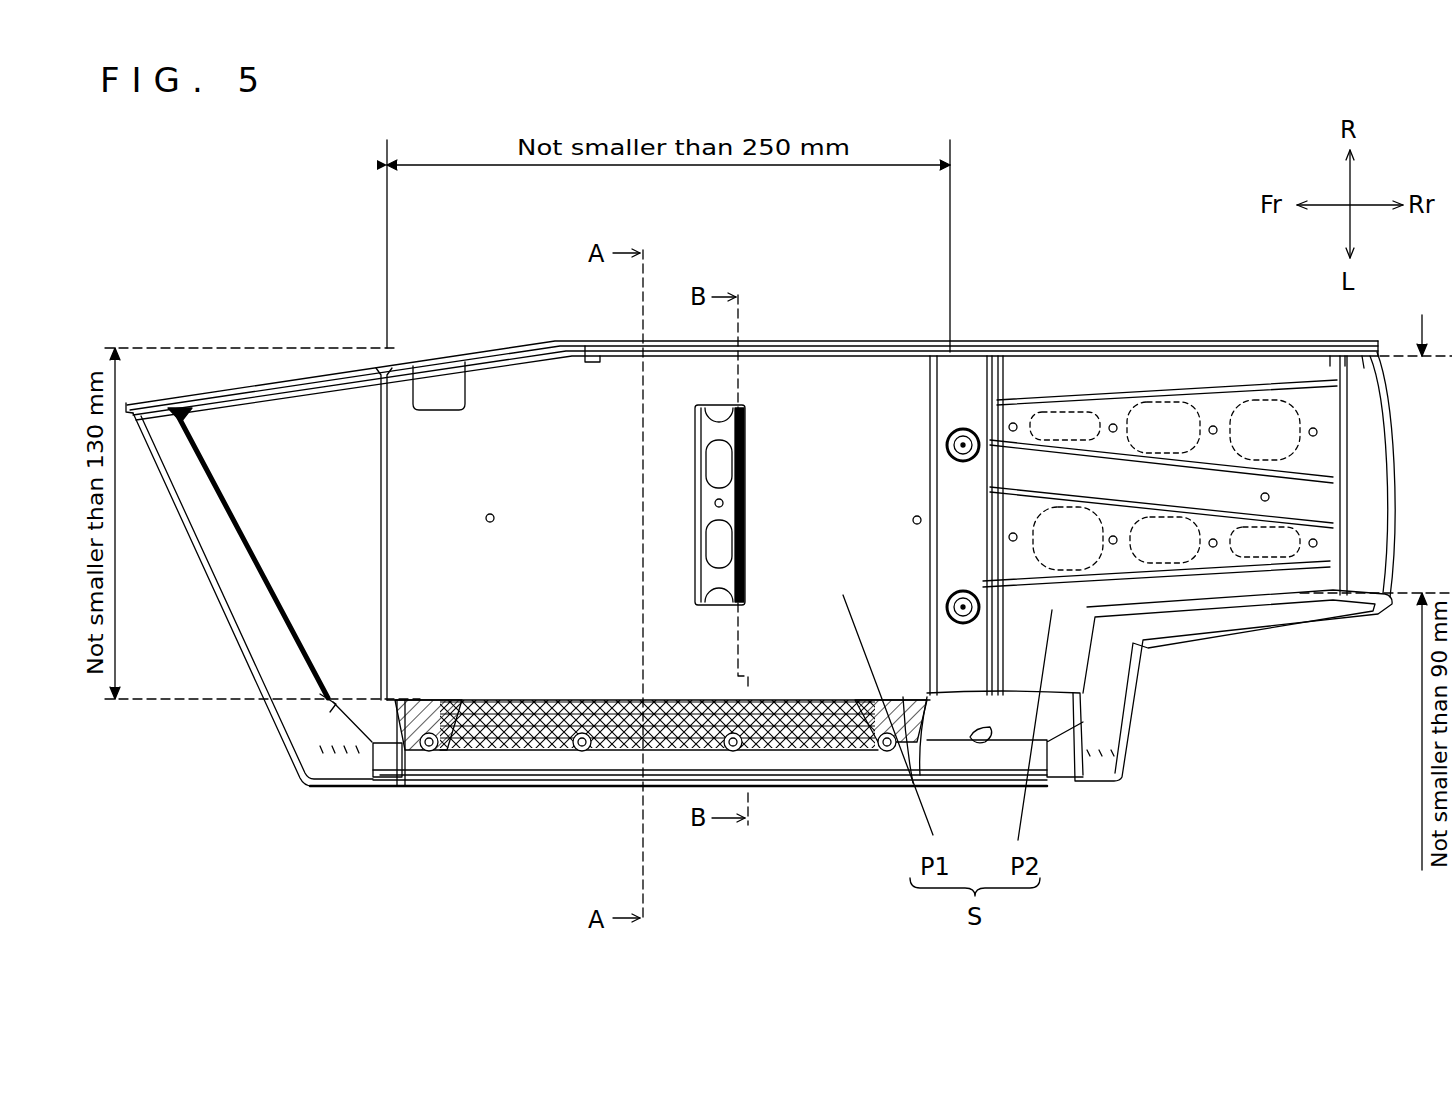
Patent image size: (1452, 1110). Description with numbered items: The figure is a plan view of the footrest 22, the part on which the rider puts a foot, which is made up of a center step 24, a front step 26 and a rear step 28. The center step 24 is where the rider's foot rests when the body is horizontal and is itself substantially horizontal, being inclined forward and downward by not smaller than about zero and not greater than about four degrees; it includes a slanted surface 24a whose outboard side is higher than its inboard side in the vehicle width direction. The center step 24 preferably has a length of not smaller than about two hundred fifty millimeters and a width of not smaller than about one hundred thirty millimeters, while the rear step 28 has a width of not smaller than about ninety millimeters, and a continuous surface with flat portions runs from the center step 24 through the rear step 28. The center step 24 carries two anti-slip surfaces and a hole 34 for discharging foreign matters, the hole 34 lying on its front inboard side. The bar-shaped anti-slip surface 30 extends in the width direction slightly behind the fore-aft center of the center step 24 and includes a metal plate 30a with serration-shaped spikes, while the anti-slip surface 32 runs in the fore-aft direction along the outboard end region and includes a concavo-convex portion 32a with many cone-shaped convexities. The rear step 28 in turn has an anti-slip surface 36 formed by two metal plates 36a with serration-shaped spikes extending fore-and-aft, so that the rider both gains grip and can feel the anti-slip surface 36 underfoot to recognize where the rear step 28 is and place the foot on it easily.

The footrest 22 is at (818, 812).
The center step 24 is at (653, 625).
The slanted surface 24a is at (832, 400).
The front step 26 is at (295, 555).
The rear step 28 is at (1189, 596).
The anti-slip surface 30 is at (769, 505).
The metal plate 30a is at (723, 505).
The anti-slip surface 32 is at (661, 783).
The concavo-convex portion 32a is at (610, 752).
The hole 34 is at (440, 395).
The anti-slip surface 36 is at (1160, 472).
The metal plate 36a is at (1128, 398).